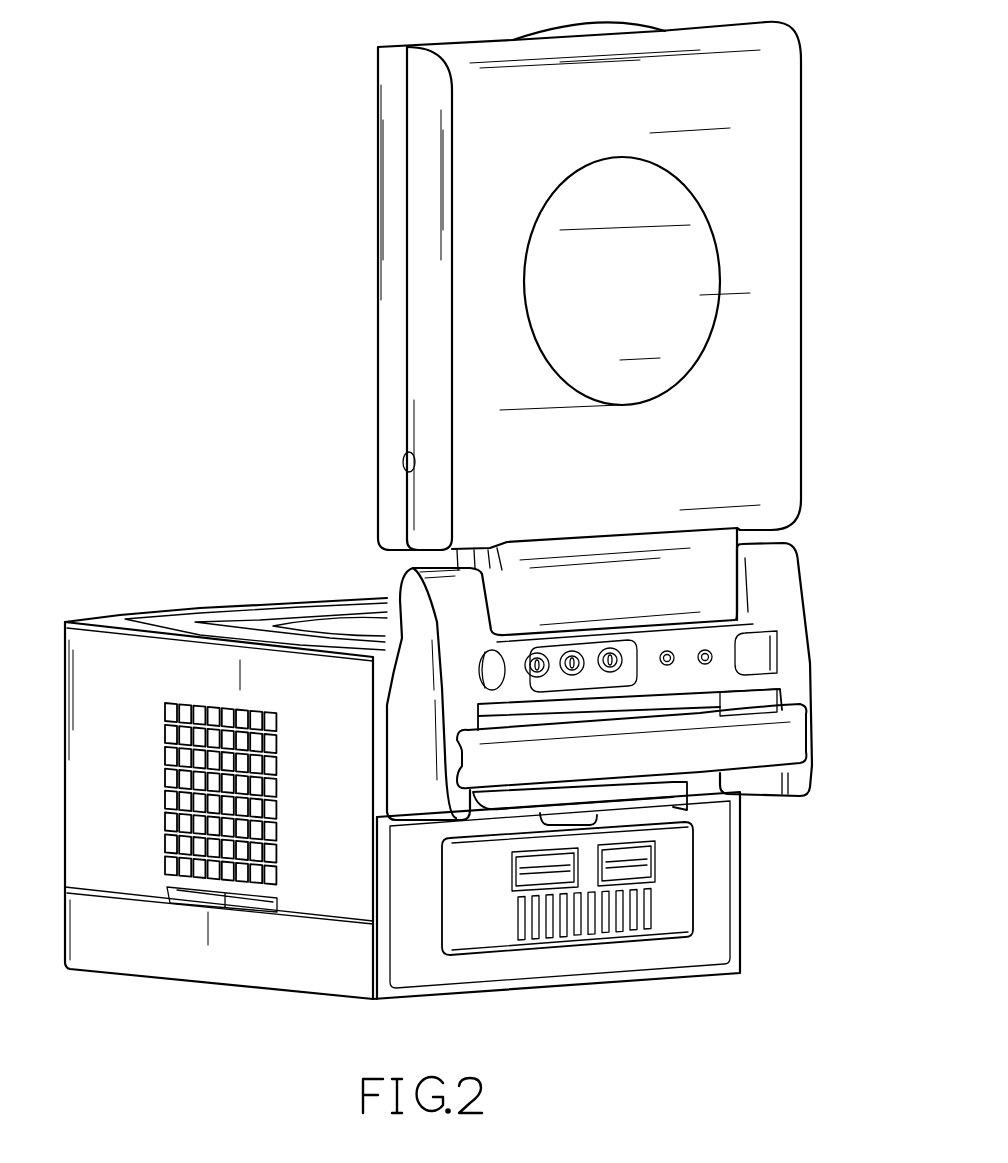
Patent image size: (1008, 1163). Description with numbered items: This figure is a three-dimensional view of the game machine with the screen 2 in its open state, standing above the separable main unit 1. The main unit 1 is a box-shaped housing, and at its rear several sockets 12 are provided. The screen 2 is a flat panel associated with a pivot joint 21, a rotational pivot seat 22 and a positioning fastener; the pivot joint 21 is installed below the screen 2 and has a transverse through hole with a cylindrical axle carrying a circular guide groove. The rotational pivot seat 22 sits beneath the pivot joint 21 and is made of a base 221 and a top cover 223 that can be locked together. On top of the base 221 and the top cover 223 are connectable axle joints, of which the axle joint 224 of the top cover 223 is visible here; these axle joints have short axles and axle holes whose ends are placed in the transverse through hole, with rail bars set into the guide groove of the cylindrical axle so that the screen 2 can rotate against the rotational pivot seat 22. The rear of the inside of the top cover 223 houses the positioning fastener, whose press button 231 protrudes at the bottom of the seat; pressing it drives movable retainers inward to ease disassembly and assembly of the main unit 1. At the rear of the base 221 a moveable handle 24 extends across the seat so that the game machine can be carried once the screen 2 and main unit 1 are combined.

The main unit 1 is at (230, 968).
The screen 2 is at (395, 361).
The sockets 12 is at (547, 870).
The pivot joint 21 is at (715, 580).
The rotational pivot seat 22 is at (801, 592).
The base 221 is at (792, 615).
The top cover 223 is at (390, 800).
The axle joint 224 is at (423, 630).
The moveable handle 24 is at (795, 735).
The press button 231 is at (605, 820).